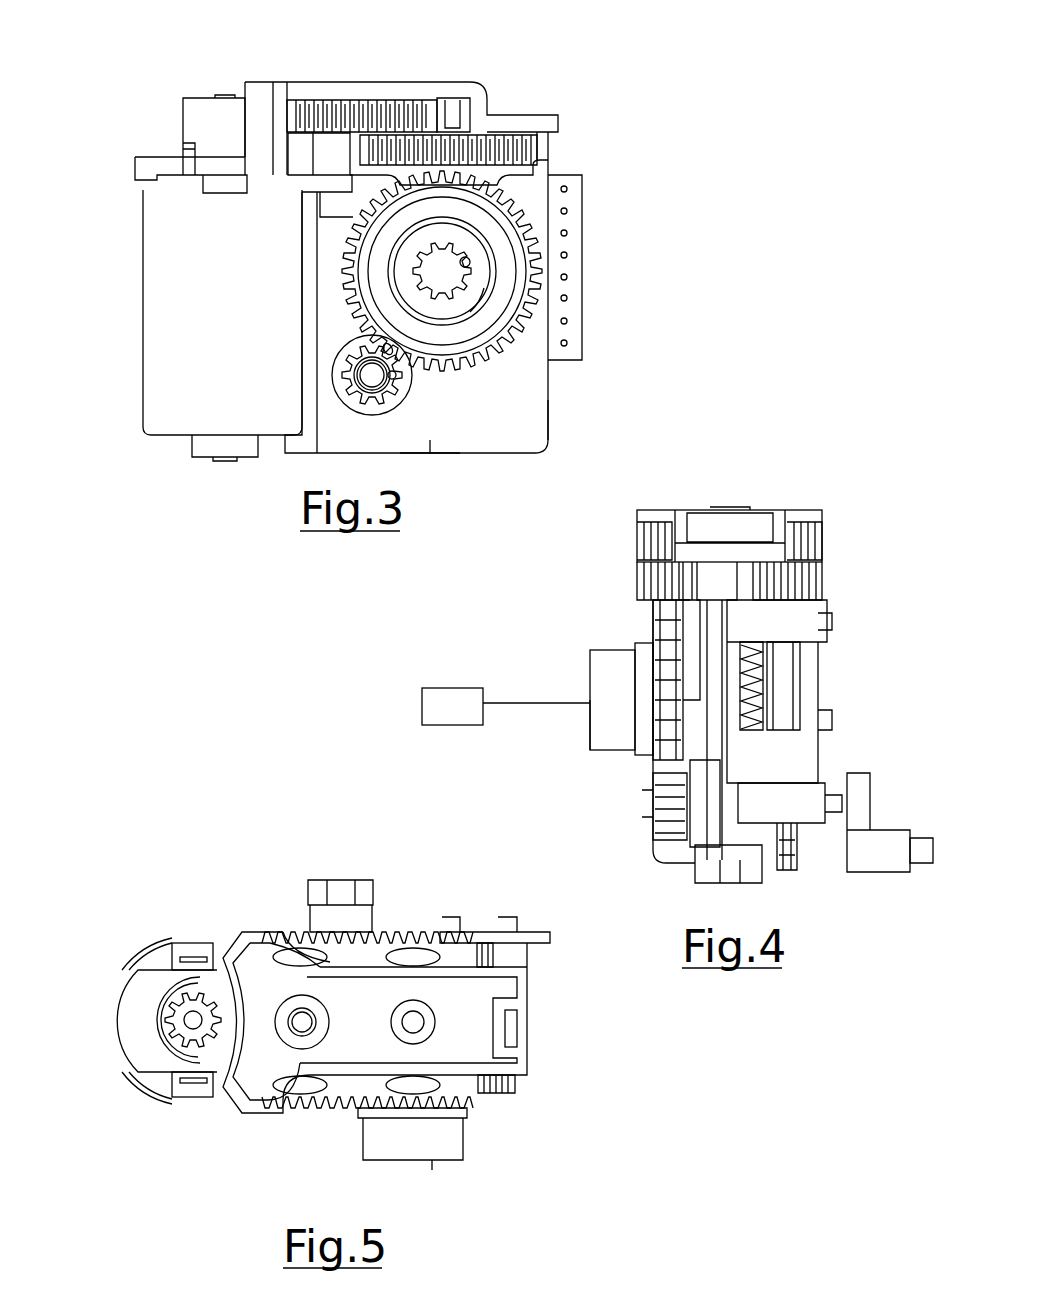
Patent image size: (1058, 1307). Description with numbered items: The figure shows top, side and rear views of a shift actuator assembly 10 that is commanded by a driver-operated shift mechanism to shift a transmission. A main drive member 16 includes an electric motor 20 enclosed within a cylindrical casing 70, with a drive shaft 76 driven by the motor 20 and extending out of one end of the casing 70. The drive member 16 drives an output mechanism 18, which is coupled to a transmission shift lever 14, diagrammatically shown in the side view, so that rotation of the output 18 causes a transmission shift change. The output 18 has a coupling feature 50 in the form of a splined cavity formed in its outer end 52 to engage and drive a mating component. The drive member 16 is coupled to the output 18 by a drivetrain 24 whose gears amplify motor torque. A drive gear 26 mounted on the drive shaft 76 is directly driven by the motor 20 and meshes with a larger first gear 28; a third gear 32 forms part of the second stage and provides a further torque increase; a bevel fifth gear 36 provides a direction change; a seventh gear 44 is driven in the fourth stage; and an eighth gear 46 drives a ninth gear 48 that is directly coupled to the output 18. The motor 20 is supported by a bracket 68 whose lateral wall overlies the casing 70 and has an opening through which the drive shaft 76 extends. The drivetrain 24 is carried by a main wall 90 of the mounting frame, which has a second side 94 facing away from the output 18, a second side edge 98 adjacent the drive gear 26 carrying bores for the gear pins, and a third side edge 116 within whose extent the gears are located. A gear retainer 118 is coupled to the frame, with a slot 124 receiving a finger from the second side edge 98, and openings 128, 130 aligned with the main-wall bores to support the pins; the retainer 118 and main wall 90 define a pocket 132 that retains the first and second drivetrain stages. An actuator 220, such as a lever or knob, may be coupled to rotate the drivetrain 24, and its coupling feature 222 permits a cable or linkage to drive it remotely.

In FIG. 3, the shift actuator assembly 10 is at (616, 84).
In FIG. 4, the shift actuator assembly 10 is at (862, 474).
In FIG. 5, the shift actuator assembly 10 is at (144, 848).
In FIG. 4, the transmission shift lever 14 is at (457, 700).
In FIG. 3, the main drive member 16 is at (117, 240).
In FIG. 5, the main drive member 16 is at (147, 1109).
In FIG. 3, the output mechanism 18 is at (466, 358).
In FIG. 4, the output mechanism 18 is at (603, 683).
In FIG. 5, the output mechanism 18 is at (448, 1138).
In FIG. 3, the electric motor 20 is at (137, 391).
In FIG. 5, the electric motor 20 is at (126, 1079).
In FIG. 4, the drivetrain 24 is at (842, 676).
In FIG. 5, the drive gear 26 is at (178, 1012).
In FIG. 3, the first gear 28 is at (330, 110).
In FIG. 4, the first gear 28 is at (822, 533).
In FIG. 5, the first gear 28 is at (290, 935).
In FIG. 3, the third gear 32 is at (493, 140).
In FIG. 4, the third gear 32 is at (832, 573).
In FIG. 5, the third gear 32 is at (412, 935).
In FIG. 4, the fifth gear 36 is at (822, 742).
In FIG. 4, the seventh gear 44 is at (785, 855).
In FIG. 3, the eighth gear 46 is at (381, 400).
In FIG. 4, the eighth gear 46 is at (660, 818).
In FIG. 3, the ninth gear 48 is at (510, 348).
In FIG. 4, the ninth gear 48 is at (668, 757).
In FIG. 5, the ninth gear 48 is at (517, 1088).
In FIG. 3, the coupling feature 50 is at (468, 270).
In FIG. 3, the outer end 52 is at (484, 288).
In FIG. 4, the outer end 52 is at (590, 716).
In FIG. 5, the outer end 52 is at (432, 1162).
In FIG. 3, the bracket 68 is at (166, 163).
In FIG. 5, the bracket 68 is at (123, 1047).
In FIG. 3, the cylindrical casing 70 is at (158, 325).
In FIG. 5, the cylindrical casing 70 is at (145, 960).
In FIG. 5, the drive shaft 76 is at (197, 1025).
In FIG. 3, the main wall 90 is at (564, 410).
In FIG. 4, the main wall 90 is at (706, 858).
In FIG. 3, the second side 94 is at (527, 440).
In FIG. 3, the second side edge 98 is at (522, 170).
In FIG. 3, the third side edge 116 is at (427, 453).
In FIG. 3, the gear retainer 118 is at (473, 68).
In FIG. 5, the gear retainer 118 is at (534, 984).
In FIG. 5, the slot 124 is at (512, 1030).
In FIG. 5, the opening 128 is at (297, 1025).
In FIG. 5, the opening 130 is at (410, 1023).
In FIG. 3, the pocket 132 is at (476, 108).
In FIG. 4, the actuator 220 is at (880, 862).
In FIG. 4, the coupling feature 222 is at (922, 845).